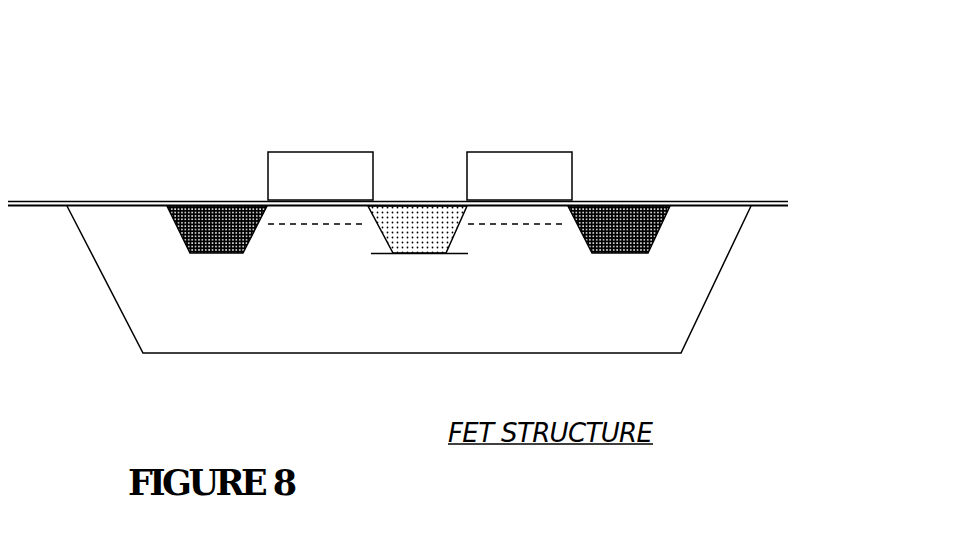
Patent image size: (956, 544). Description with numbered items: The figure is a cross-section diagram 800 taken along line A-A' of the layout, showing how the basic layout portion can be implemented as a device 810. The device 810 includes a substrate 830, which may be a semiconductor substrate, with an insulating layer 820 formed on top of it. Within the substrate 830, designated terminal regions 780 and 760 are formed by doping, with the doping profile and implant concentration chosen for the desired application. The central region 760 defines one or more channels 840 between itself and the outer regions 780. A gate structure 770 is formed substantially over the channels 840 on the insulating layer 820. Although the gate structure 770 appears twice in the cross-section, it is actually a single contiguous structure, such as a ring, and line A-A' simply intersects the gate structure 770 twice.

The cross-section diagram 800 is at (112, 69).
The device 810 is at (79, 365).
The insulating layer 820 is at (97, 201).
The substrate 830 is at (334, 340).
The channel 840 is at (320, 224).
The designated terminal region 760 is at (423, 254).
The gate structure 770 is at (323, 152).
The designated terminal region 780 is at (218, 254).